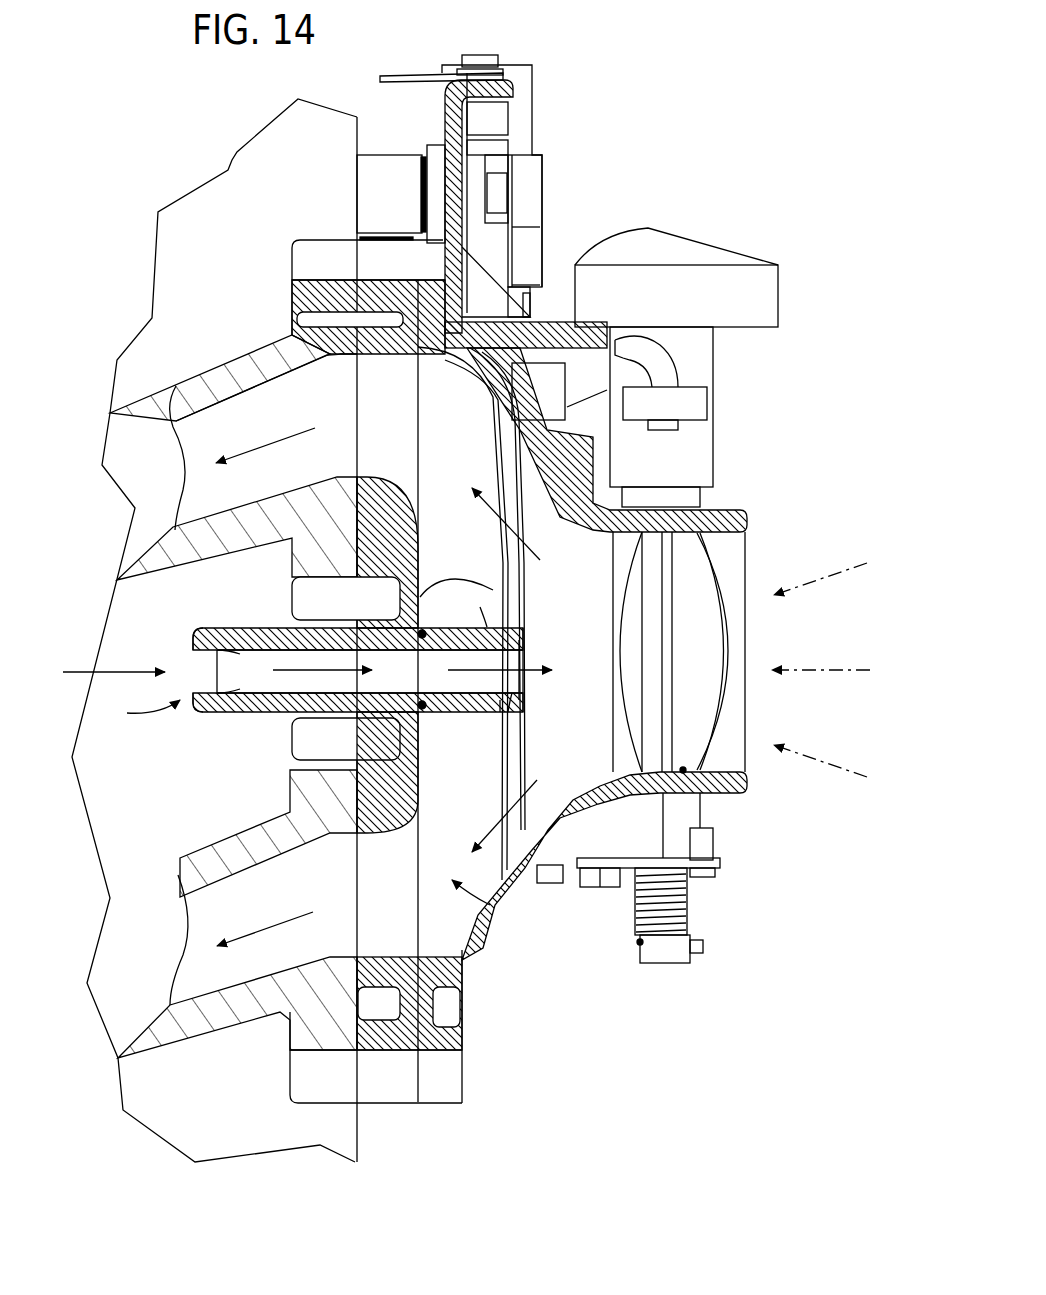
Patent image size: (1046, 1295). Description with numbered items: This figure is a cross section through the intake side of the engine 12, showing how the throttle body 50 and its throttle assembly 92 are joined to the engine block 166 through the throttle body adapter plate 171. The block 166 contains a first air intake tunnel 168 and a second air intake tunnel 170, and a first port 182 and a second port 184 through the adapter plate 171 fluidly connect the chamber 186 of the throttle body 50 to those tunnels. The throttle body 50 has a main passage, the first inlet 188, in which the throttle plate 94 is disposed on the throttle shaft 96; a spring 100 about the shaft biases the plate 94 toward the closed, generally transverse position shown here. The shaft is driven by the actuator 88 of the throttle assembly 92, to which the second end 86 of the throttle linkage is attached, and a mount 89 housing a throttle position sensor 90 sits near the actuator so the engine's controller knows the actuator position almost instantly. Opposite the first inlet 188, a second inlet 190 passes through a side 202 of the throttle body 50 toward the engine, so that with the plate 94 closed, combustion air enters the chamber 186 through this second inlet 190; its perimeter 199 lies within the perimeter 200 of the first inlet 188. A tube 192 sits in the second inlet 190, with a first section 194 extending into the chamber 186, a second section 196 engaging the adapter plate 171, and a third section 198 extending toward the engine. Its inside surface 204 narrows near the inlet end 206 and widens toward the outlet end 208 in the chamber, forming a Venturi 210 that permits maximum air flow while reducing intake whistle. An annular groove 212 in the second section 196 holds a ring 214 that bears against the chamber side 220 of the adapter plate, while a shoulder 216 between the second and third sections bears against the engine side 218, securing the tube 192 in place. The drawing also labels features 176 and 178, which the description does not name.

The engine 12 is at (652, 59).
The throttle body 50 is at (735, 517).
The second end of third throttle link 86 is at (663, 367).
The actuator 88 is at (688, 458).
The mount 89 is at (713, 252).
The throttle position sensor 90 is at (661, 417).
The throttle assembly 92 is at (645, 158).
The throttle plate 94 is at (710, 657).
The throttle shaft 96 is at (653, 575).
The spring 100 is at (687, 913).
The block 166 is at (274, 224).
The first air intake tunnel 168 is at (248, 537).
The second air intake tunnel 170 is at (240, 1007).
The throttle body adapter plate 171 is at (388, 290).
The hub 176 is at (360, 323).
The lower hub plate 178 is at (367, 1037).
The first port 182 is at (378, 407).
The second port 184 is at (380, 910).
The chamber 186 is at (589, 602).
The first inlet 188 is at (700, 795).
The second inlet 190 is at (480, 718).
The tube 192 is at (218, 707).
The first section 194 is at (455, 640).
The second section 196 is at (360, 605).
The third section 198 is at (285, 628).
The perimeter of second inlet 199 is at (508, 710).
The perimeter of first inlet 200 is at (727, 770).
The side of throttle body 202 is at (482, 930).
The inside surface 204 is at (233, 655).
The inlet end 206 is at (203, 637).
The outlet end 208 is at (527, 640).
The Venturi 210 is at (134, 713).
The annular groove 212 is at (460, 720).
The ring 214 is at (420, 710).
The shoulder 216 is at (290, 713).
The engine side 218 is at (290, 760).
The chamber side 220 is at (423, 593).